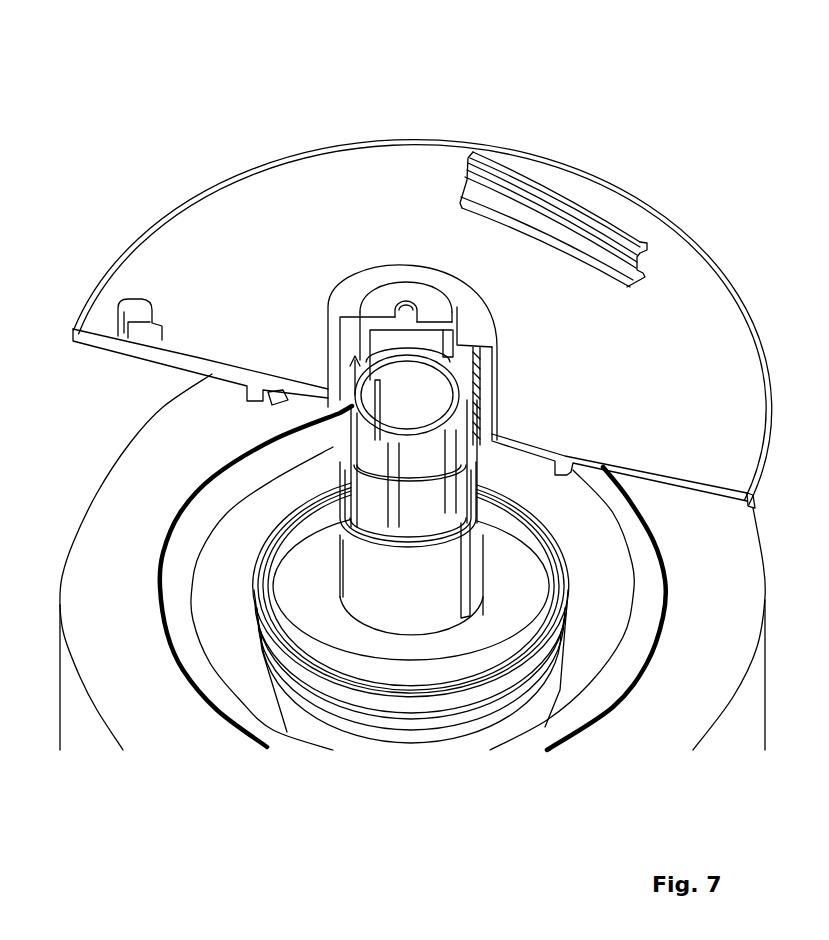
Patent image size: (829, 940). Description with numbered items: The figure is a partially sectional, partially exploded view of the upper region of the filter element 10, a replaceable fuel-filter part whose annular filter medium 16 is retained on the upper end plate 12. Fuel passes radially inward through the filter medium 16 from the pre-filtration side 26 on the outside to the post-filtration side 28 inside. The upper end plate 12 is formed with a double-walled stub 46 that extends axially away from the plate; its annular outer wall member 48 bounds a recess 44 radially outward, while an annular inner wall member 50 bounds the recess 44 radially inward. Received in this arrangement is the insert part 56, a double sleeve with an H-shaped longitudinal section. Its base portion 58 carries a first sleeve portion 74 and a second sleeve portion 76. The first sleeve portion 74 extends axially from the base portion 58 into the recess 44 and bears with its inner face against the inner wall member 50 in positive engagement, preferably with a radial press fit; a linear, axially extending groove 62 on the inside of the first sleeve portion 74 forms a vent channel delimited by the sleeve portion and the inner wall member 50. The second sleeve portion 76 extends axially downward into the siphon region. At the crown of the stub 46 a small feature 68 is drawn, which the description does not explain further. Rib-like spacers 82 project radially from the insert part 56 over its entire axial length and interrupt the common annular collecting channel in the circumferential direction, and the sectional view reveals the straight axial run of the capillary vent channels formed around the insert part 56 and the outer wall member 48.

The filter element 10 is at (655, 108).
The upper end plate 12 is at (688, 349).
The filter medium 16 is at (713, 599).
The pre-filtration side 26 is at (788, 506).
The post-filtration side 28 is at (511, 629).
The recess 44 is at (350, 410).
The double-walled stub 46 is at (310, 305).
The annular outer wall member 48 is at (333, 355).
The annular inner wall member 50 is at (453, 353).
The insert part 56 is at (370, 452).
The base portion 58 is at (420, 423).
The groove 62 is at (428, 388).
The pin 68 is at (405, 300).
The first sleeve portion 74 is at (492, 430).
The second sleeve portion 76 is at (413, 500).
The rib-like spacers 82 is at (383, 486).